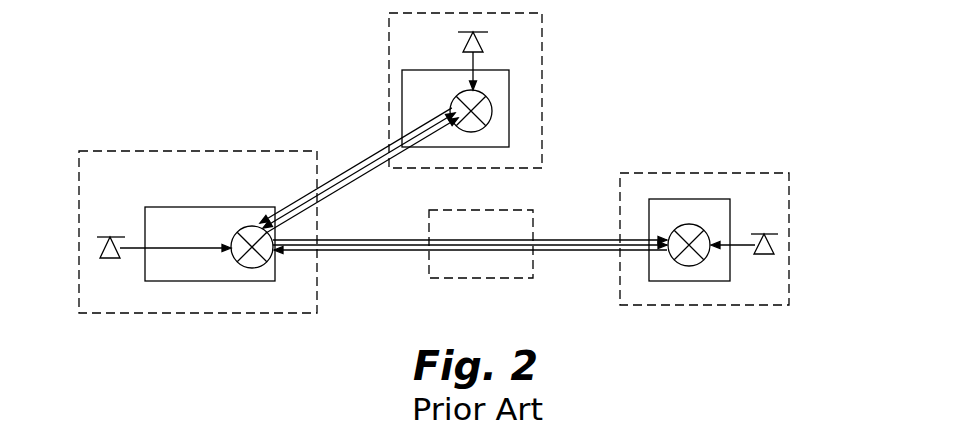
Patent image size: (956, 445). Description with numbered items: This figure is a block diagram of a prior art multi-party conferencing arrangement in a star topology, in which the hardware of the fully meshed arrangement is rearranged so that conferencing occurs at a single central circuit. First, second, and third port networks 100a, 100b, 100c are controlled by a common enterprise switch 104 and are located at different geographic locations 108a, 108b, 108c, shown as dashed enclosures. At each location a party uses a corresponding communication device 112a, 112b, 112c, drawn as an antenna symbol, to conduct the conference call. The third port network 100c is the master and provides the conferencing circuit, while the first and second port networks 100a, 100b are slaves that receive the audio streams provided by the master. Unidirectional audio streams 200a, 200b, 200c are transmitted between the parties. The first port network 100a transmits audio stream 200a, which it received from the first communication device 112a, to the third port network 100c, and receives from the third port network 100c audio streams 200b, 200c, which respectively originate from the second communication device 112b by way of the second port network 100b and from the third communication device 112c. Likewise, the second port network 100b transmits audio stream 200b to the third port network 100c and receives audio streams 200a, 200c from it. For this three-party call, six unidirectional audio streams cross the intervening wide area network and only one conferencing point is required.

The first port network 100a is at (700, 199).
The second port network 100b is at (509, 100).
The third port network 100c is at (257, 281).
The enterprise switch 104 is at (508, 278).
The first geographic location 108a is at (743, 305).
The second geographic location 108b is at (542, 32).
The third geographic location 108c is at (160, 313).
The first communication device 112a is at (773, 232).
The second communication device 112b is at (465, 44).
The third communication device 112c is at (107, 247).
The first unidirectional audio stream 200a is at (352, 165).
The second unidirectional audio stream 200b is at (378, 149).
The third unidirectional audio stream 200c is at (368, 170).